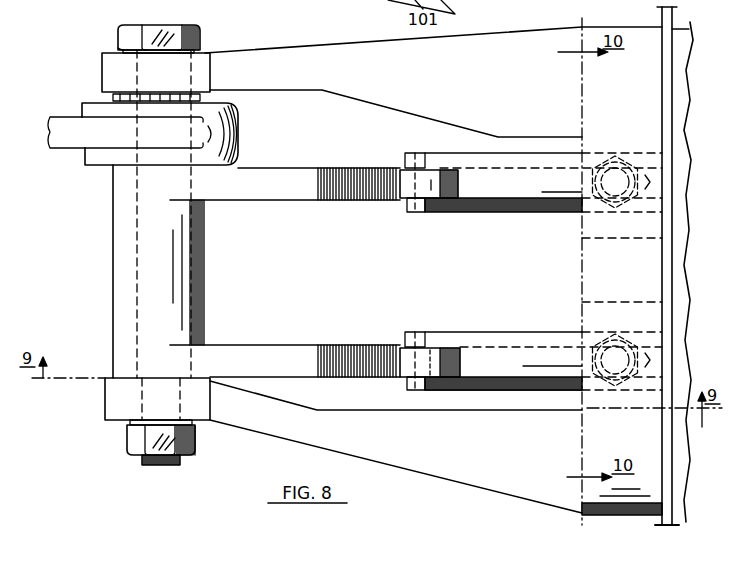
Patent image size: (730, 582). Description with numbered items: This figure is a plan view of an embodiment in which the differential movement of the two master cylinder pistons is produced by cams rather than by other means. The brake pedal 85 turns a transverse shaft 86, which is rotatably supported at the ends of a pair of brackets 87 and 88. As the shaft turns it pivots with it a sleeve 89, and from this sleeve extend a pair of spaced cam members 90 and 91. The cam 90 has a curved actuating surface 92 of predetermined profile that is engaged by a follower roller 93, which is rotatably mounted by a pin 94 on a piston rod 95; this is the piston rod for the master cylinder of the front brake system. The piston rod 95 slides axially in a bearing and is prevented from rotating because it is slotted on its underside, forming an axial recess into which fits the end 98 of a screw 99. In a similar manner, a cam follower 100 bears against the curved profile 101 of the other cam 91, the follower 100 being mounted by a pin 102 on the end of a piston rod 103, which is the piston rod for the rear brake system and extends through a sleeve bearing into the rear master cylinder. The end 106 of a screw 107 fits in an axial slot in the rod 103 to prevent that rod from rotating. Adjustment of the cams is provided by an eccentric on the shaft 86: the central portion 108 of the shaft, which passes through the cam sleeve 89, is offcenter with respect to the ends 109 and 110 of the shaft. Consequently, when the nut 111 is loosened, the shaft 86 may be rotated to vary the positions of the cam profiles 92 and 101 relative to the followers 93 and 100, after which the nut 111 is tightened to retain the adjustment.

The brake pedal 85 is at (68, 130).
The transverse shaft 86 is at (172, 473).
The bracket 87 is at (283, 82).
The bracket 88 is at (265, 422).
The sleeve 89 is at (177, 268).
The cam member 90 is at (280, 190).
The cam member 91 is at (267, 360).
The curved actuating surface 92 is at (373, 188).
The follower roller 93 is at (408, 190).
The pin 94 is at (415, 160).
The piston rod 95 is at (502, 203).
The screw end 98 is at (623, 163).
The screw 99 is at (608, 208).
The cam follower 100 is at (447, 353).
The curved profile 101 is at (368, 360).
The pin 102 is at (417, 347).
The piston rod 103 is at (533, 340).
The screw end 106 is at (628, 338).
The screw 107 is at (613, 387).
The central portion of shaft 108 is at (137, 328).
The shaft end 109 is at (127, 72).
The shaft end 110 is at (147, 465).
The nut 111 is at (133, 442).